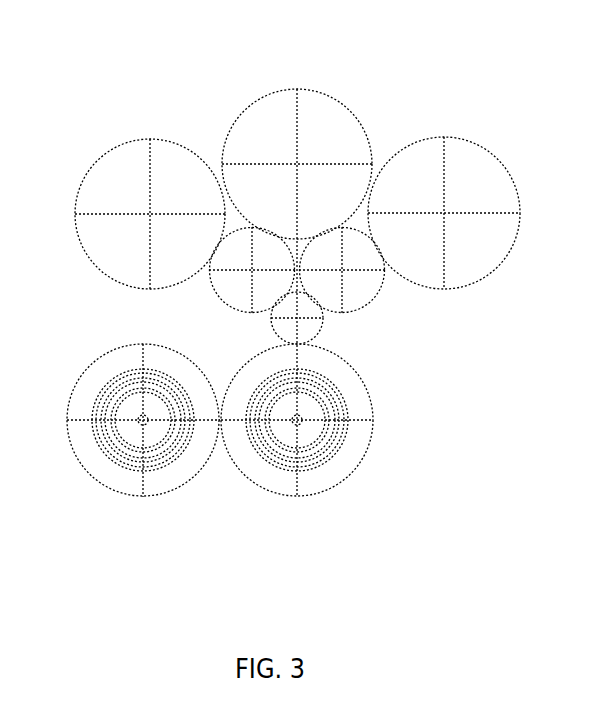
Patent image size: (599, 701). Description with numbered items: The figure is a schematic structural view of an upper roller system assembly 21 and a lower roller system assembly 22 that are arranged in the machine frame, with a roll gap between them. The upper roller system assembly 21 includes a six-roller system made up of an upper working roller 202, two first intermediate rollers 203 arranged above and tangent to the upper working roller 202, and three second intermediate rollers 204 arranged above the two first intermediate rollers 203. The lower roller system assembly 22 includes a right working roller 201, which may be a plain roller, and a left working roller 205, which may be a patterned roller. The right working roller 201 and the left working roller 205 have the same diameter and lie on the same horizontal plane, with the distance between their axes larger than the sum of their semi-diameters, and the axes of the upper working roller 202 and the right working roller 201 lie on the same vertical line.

The upper roller system assembly 21 is at (238, 37).
The lower roller system assembly 22 is at (239, 480).
The right working roller 201 is at (297, 420).
The upper working roller 202 is at (297, 318).
The first intermediate rollers 203 is at (342, 270).
The second intermediate rollers 204 is at (444, 213).
The left working roller 205 is at (143, 420).